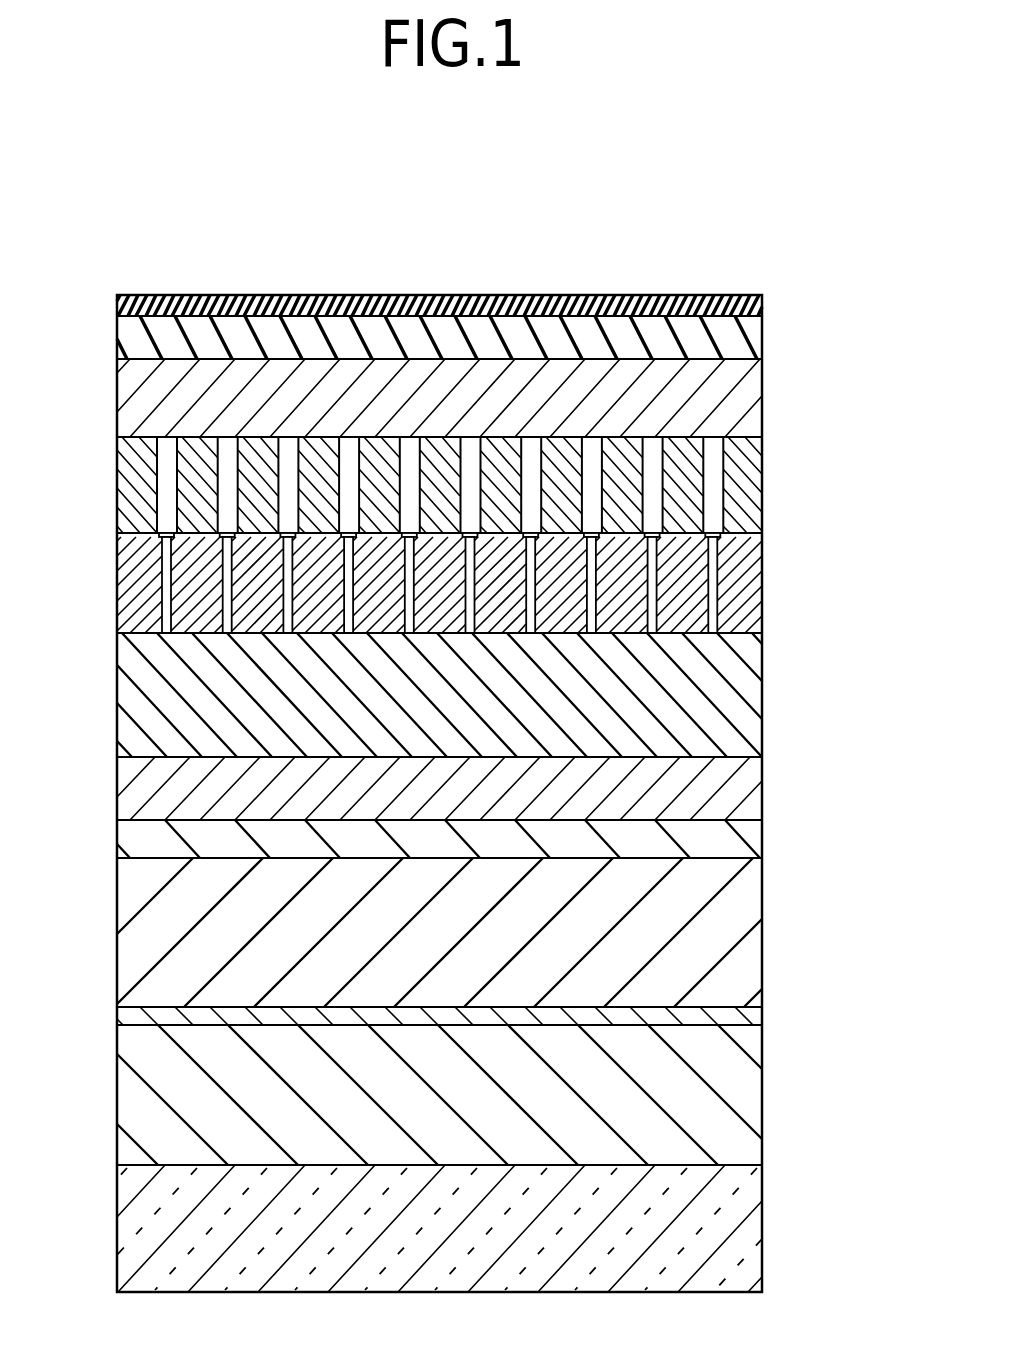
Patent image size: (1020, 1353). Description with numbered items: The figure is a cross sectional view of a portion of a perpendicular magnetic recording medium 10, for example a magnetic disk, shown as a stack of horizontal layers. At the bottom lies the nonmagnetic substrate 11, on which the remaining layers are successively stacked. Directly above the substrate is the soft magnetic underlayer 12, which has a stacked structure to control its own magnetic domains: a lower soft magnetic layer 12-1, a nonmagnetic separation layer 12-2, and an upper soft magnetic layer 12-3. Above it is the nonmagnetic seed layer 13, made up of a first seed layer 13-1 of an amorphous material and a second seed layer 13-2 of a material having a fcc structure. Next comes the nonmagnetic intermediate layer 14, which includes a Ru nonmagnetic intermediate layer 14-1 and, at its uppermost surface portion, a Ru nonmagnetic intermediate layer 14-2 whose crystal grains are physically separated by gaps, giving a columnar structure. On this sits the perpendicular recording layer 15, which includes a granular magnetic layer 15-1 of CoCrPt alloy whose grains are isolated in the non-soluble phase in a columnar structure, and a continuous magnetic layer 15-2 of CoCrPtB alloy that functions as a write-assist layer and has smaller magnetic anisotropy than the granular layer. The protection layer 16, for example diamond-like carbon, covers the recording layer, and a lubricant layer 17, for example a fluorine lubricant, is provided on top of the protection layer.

The perpendicular magnetic recording medium 10 is at (718, 237).
The nonmagnetic substrate 11 is at (105, 1166).
The soft magnetic underlayer 12 is at (469, 1011).
The soft magnetic layer 12-1 is at (762, 1088).
The nonmagnetic separation layer 12-2 is at (762, 1008).
The soft magnetic layer 12-3 is at (762, 925).
The nonmagnetic seed layer 13 is at (469, 809).
The first seed layer 13-1 is at (762, 833).
The second seed layer 13-2 is at (762, 782).
The nonmagnetic intermediate layer 14 is at (468, 645).
The Ru nonmagnetic intermediate layer 14-1 is at (762, 680).
The Ru nonmagnetic intermediate layer 14-2 is at (762, 570).
The perpendicular recording layer 15 is at (468, 446).
The granular magnetic layer 15-1 is at (762, 475).
The continuous magnetic layer 15-2 is at (762, 390).
The protection layer 16 is at (105, 316).
The lubricant layer 17 is at (762, 298).